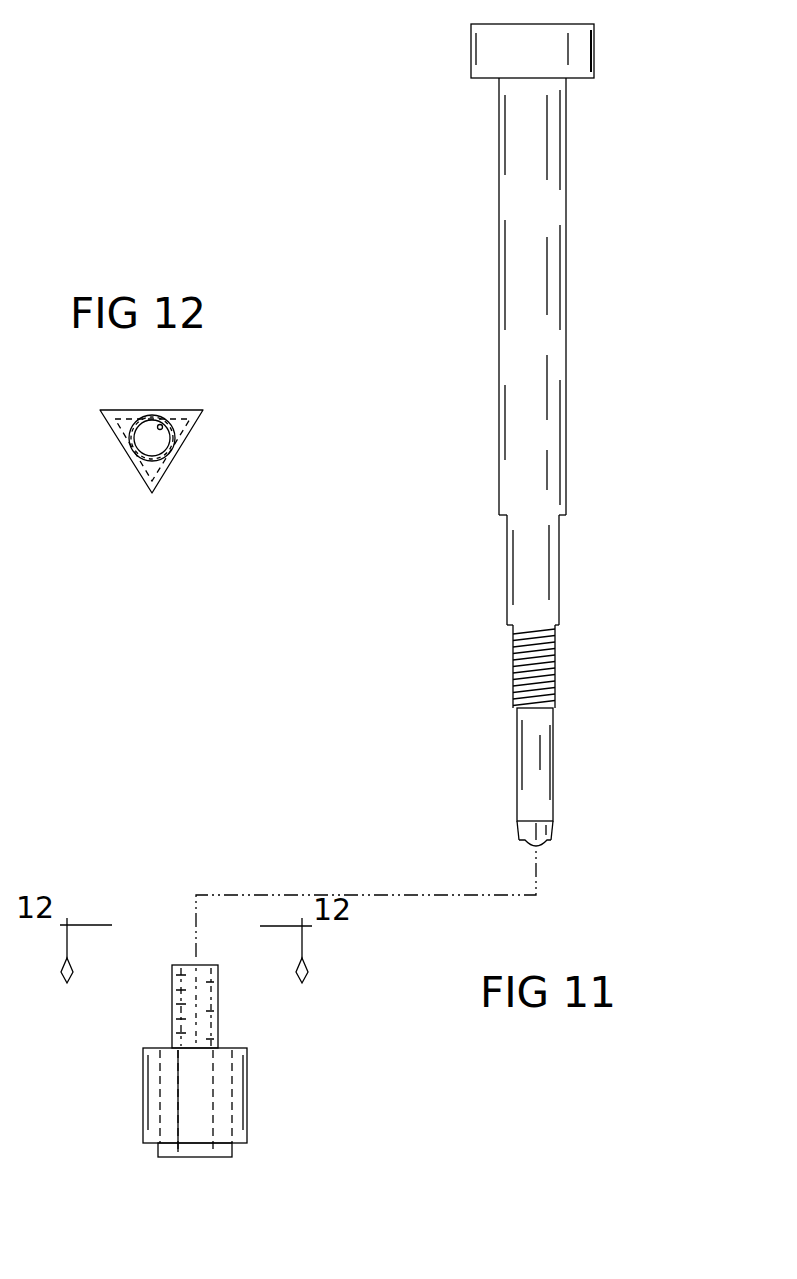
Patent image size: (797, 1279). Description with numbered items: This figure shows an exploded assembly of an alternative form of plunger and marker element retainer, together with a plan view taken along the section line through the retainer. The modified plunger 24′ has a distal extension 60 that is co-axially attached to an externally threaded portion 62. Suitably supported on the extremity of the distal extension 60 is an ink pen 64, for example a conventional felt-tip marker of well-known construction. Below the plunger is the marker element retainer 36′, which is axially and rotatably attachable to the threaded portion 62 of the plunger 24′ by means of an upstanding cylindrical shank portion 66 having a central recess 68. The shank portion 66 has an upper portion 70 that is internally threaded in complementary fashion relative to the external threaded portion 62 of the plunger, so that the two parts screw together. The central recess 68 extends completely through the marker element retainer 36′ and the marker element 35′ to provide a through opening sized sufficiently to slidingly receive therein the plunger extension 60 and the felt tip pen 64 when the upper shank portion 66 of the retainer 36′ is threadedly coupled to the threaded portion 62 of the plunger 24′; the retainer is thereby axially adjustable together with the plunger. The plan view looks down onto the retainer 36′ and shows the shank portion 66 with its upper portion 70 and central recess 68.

In FIG. 11, the modified plunger 24′ is at (578, 324).
In FIG. 11, the externally threaded portion 62 is at (555, 660).
In FIG. 11, the distal extension 60 is at (553, 768).
In FIG. 11, the ink pen 64 is at (553, 830).
In FIG. 11, the cylindrical shank portion 66 is at (218, 1015).
In FIG. 12, the cylindrical shank portion 66 is at (105, 460).
In FIG. 11, the marker element retainer 36′ is at (143, 1097).
In FIG. 12, the marker element retainer 36′ is at (192, 432).
In FIG. 11, the marker element 35′ is at (157, 1152).
In FIG. 11, the central recess 68 is at (178, 1112).
In FIG. 12, the upper portion 70 is at (163, 420).